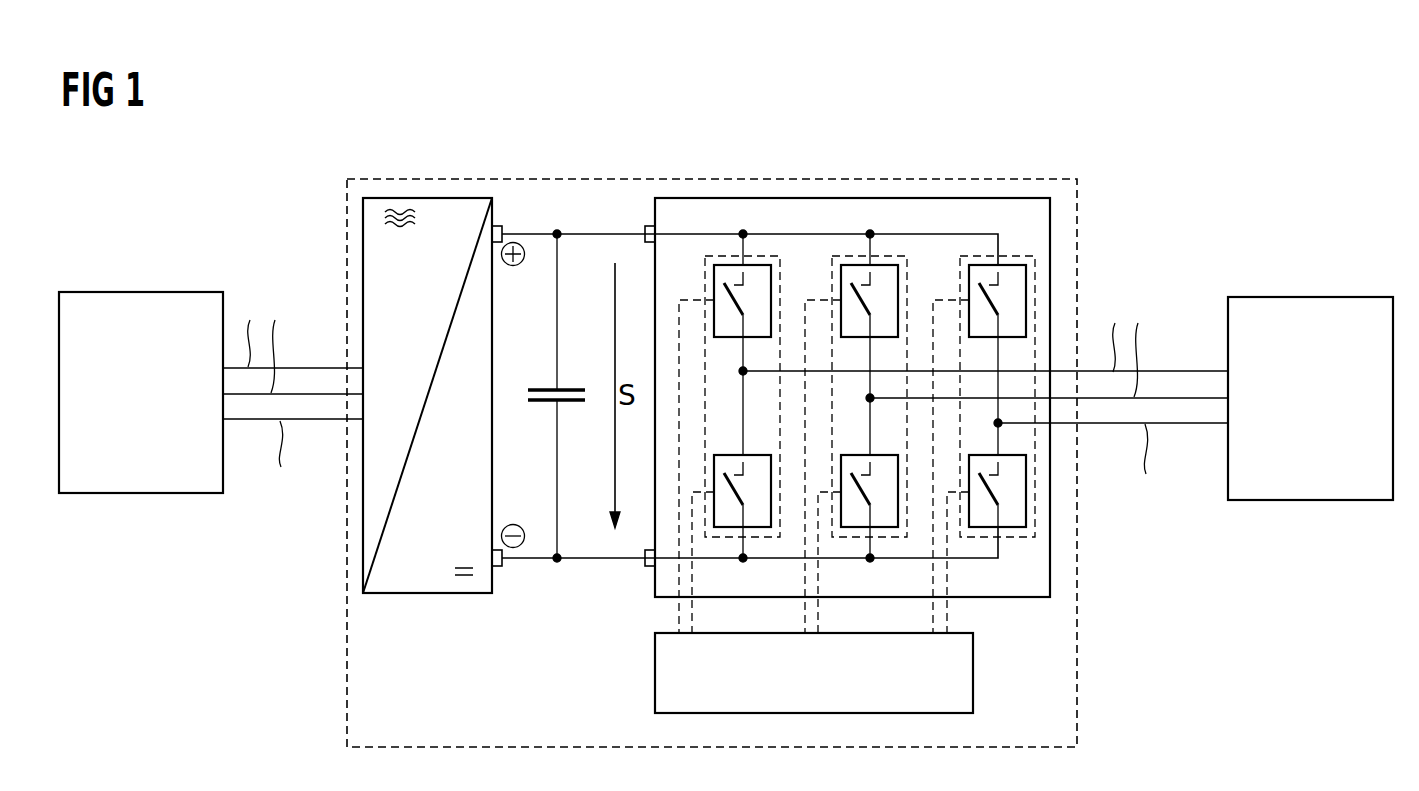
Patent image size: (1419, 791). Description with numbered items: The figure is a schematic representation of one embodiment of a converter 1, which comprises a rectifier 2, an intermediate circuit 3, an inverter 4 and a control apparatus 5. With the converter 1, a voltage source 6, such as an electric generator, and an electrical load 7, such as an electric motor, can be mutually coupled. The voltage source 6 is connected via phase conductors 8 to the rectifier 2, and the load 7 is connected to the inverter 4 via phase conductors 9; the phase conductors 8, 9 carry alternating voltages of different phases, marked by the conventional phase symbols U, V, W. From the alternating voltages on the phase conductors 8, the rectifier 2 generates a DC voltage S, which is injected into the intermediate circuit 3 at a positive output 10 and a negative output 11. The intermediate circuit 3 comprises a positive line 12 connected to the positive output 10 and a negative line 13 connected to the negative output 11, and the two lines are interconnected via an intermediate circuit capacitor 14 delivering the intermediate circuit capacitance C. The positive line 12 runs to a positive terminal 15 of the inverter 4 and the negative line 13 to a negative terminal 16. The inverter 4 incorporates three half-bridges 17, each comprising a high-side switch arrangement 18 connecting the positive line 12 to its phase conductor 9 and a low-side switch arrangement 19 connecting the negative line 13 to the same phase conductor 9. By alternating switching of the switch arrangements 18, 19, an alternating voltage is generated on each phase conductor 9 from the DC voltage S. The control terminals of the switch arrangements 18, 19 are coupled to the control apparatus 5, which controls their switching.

The converter 1 is at (380, 178).
The rectifier 2 is at (430, 198).
The intermediate circuit 3 is at (577, 196).
The inverter 4 is at (700, 197).
The control apparatus 5 is at (974, 670).
The voltage source 6 is at (128, 291).
The electrical load 7 is at (1306, 296).
The phase conductors 8 is at (297, 367).
The phase conductors 9 is at (1162, 372).
The positive output 10 is at (500, 225).
The negative output 11 is at (497, 567).
The positive line 12 is at (538, 233).
The negative line 13 is at (585, 559).
The intermediate circuit capacitor 14 is at (540, 389).
The positive terminal 15 is at (648, 225).
The negative terminal 16 is at (650, 567).
The half-bridge 17 is at (757, 256).
The switch arrangement 18 is at (727, 338).
The switch arrangement 19 is at (757, 454).